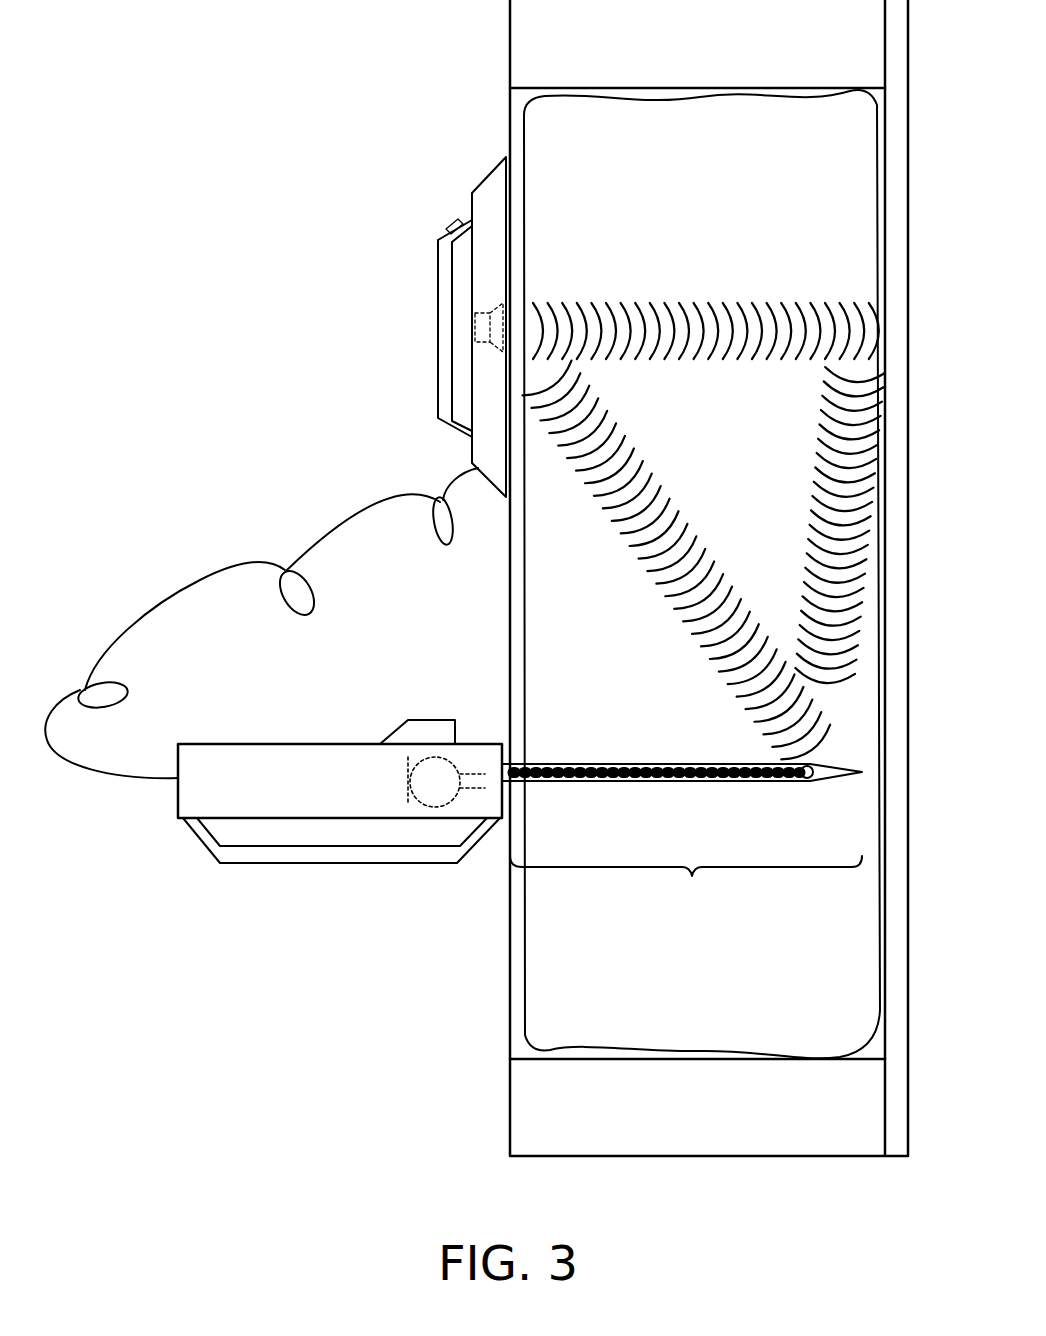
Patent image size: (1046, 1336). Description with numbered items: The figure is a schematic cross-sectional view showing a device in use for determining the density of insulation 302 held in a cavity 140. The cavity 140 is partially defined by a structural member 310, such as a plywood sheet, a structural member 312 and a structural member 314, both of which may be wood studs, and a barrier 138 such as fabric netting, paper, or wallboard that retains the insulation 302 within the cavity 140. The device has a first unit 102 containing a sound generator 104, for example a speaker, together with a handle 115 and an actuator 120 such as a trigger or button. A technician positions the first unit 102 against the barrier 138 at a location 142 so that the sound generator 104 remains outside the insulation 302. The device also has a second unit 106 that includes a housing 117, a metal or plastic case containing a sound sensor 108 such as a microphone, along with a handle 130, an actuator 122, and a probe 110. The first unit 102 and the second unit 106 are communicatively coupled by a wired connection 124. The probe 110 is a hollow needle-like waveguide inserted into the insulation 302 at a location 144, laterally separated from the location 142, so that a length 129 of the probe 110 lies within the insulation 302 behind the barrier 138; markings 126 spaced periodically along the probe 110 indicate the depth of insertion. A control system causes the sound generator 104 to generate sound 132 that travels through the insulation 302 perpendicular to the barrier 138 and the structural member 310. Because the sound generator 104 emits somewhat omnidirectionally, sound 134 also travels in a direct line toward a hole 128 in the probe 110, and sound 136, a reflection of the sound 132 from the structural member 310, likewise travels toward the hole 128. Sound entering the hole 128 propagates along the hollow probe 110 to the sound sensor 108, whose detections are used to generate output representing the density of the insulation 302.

The first unit 102 is at (397, 290).
The sound generator 104 is at (484, 330).
The second unit 106 is at (340, 768).
The sound sensor 108 is at (408, 760).
The probe 110 is at (682, 807).
The handle 115 is at (442, 264).
The housing 117 is at (270, 750).
The actuator 120 is at (458, 221).
The actuator 122 is at (430, 738).
The wired connection 124 is at (323, 530).
The markings 126 is at (650, 778).
The hole 128 is at (806, 781).
The length 129 is at (686, 881).
The handle 130 is at (265, 856).
The sound 132 is at (757, 282).
The sound 134 is at (683, 482).
The sound 136 is at (802, 522).
The barrier 138 is at (508, 120).
The cavity 140 is at (546, 626).
The location 142 is at (526, 292).
The location 144 is at (532, 790).
The insulation 302 is at (793, 141).
The structural member 310 is at (890, 430).
The structural member 312 is at (727, 62).
The structural member 314 is at (672, 1121).